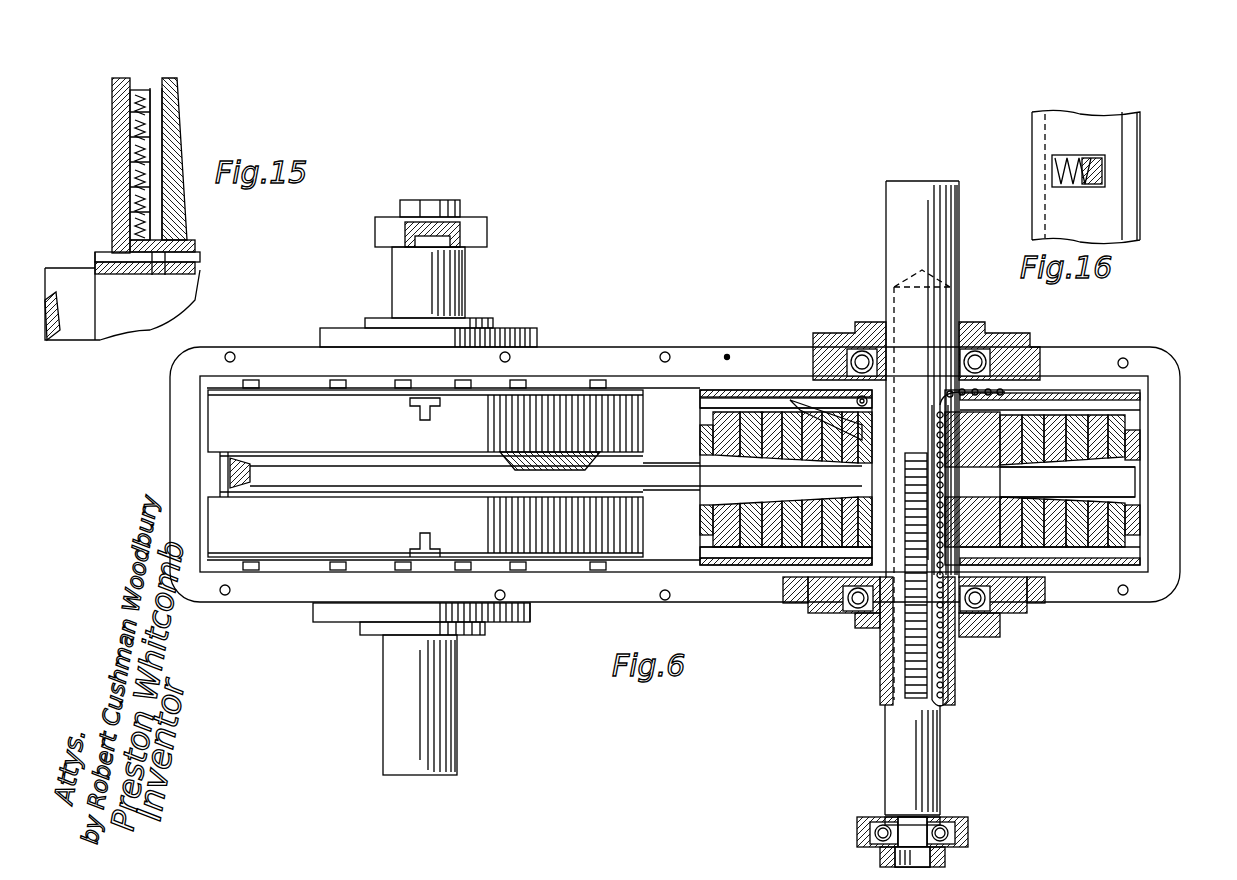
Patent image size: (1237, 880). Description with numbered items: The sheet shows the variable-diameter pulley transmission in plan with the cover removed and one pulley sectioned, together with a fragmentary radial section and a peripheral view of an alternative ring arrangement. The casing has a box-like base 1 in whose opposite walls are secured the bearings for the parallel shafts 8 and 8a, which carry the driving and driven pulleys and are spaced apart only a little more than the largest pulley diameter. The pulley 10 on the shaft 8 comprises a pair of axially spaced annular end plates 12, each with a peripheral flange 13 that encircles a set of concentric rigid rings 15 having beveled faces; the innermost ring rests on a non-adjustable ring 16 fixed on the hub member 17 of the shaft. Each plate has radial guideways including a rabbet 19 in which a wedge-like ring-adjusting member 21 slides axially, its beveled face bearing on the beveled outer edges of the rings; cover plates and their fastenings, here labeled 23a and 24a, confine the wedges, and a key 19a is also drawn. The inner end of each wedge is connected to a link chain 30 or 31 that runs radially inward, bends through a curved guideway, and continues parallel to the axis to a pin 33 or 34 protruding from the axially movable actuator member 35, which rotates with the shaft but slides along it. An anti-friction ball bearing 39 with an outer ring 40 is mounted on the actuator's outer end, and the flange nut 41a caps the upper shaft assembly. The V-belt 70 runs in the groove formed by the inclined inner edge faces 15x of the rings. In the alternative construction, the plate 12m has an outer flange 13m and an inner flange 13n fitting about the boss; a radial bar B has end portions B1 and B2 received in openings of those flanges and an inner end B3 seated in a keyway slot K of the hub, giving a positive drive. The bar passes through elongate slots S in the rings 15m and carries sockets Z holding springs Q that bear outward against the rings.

In FIG. 6, the box-like base 1 is at (218, 606).
In FIG. 6, the shaft 8 is at (952, 240).
In FIG. 6, the shaft 8a is at (458, 684).
In FIG. 6, the pulley 10 is at (754, 356).
In FIG. 6, the annular end plate 12 is at (705, 392).
In FIG. 6, the peripheral flange 13 is at (700, 432).
In FIG. 6, the rigid ring 15 is at (745, 470).
In FIG. 6, the inner edge face 15x is at (1098, 484).
In FIG. 6, the non-adjustable ring 16 is at (795, 400).
In FIG. 6, the hub member 17 is at (876, 488).
In FIG. 15, the hub member 17 is at (98, 266).
In FIG. 6, the rabbet 19 is at (702, 402).
In FIG. 6, the key 19a is at (415, 402).
In FIG. 6, the wedge-like ring-adjusting member 21 is at (1005, 550).
In FIG. 6, the lower gear 23a is at (400, 380).
In FIG. 6, the upper gear 24a is at (310, 380).
In FIG. 6, the link chain 30 is at (950, 666).
In FIG. 6, the link chain 31 is at (954, 404).
In FIG. 6, the pin 33 is at (942, 706).
In FIG. 6, the pin 34 is at (916, 575).
In FIG. 6, the actuator member 35 is at (888, 744).
In FIG. 6, the anti-friction bearing 39 is at (882, 818).
In FIG. 6, the outer ring 40 is at (857, 834).
In FIG. 6, the top flange nut 41a is at (460, 234).
In FIG. 6, the V-belt 70 is at (1003, 486).
In FIG. 15, the outer flange 13m is at (128, 84).
In FIG. 15, the ring 15m is at (135, 128).
In FIG. 16, the ring 15m is at (1045, 136).
In FIG. 15, the plate 12m is at (118, 202).
In FIG. 15, the inner flange 13n is at (166, 262).
In FIG. 15, the radially extending bar B is at (160, 206).
In FIG. 15, the end portion of bar B1 is at (180, 86).
In FIG. 15, the end portion of bar B2 is at (182, 250).
In FIG. 15, the inner end of bar B3 is at (165, 270).
In FIG. 15, the keyway slot K is at (97, 258).
In FIG. 16, the spring Q is at (1068, 166).
In FIG. 16, the elongate slot S is at (1056, 178).
In FIG. 16, the socket Z is at (1092, 186).